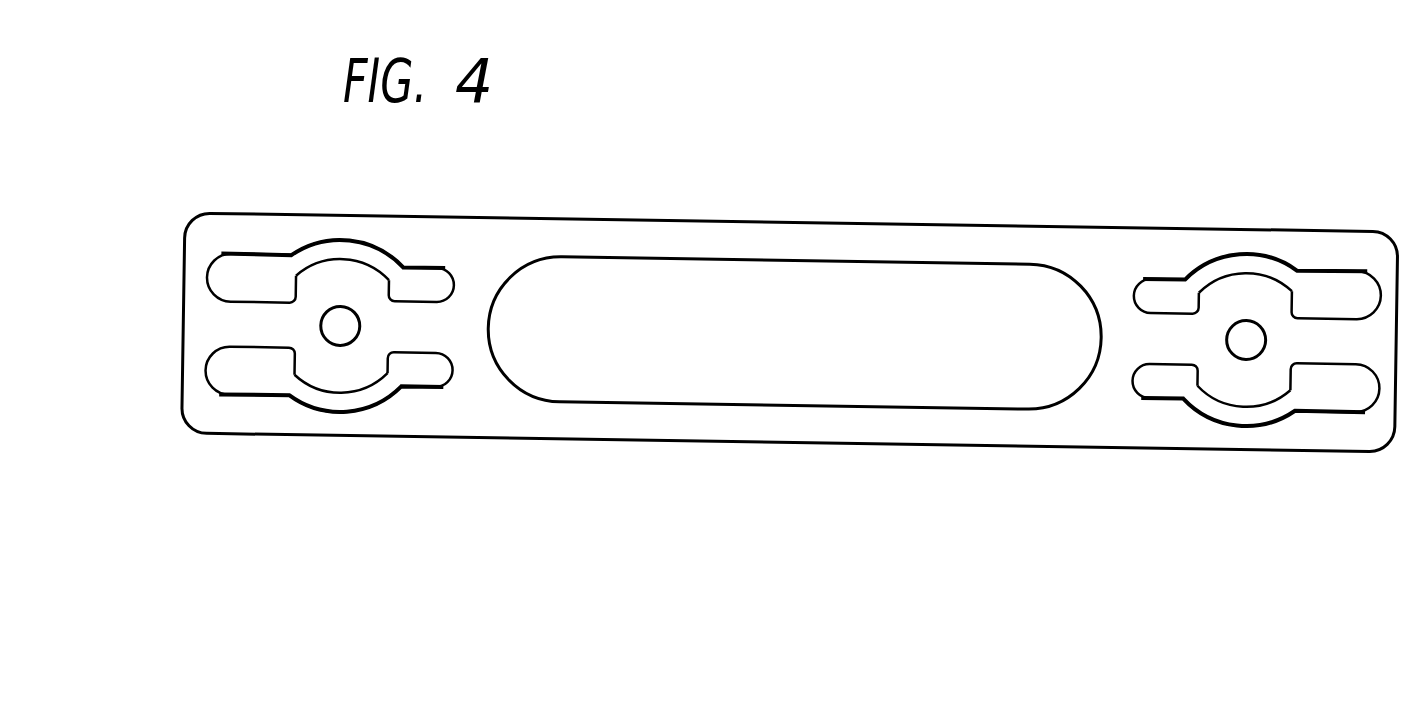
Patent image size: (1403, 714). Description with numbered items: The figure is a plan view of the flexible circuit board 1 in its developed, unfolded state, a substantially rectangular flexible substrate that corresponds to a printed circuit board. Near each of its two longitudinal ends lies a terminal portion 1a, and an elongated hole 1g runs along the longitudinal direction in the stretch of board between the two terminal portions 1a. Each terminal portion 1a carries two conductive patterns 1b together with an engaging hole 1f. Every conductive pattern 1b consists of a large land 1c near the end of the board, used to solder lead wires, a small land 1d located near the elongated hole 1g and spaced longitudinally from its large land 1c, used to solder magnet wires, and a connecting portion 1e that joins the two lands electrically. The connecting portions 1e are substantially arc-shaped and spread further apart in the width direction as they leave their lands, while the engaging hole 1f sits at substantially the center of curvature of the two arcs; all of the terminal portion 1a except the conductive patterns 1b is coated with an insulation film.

The flexible circuit board 1 is at (930, 216).
The terminal portion 1a is at (273, 223).
The conductive pattern 1b is at (333, 240).
The large land 1c is at (235, 258).
The small land 1d is at (423, 263).
The connecting portion 1e is at (370, 248).
The engaging hole 1f is at (335, 338).
The elongated hole 1g is at (786, 266).